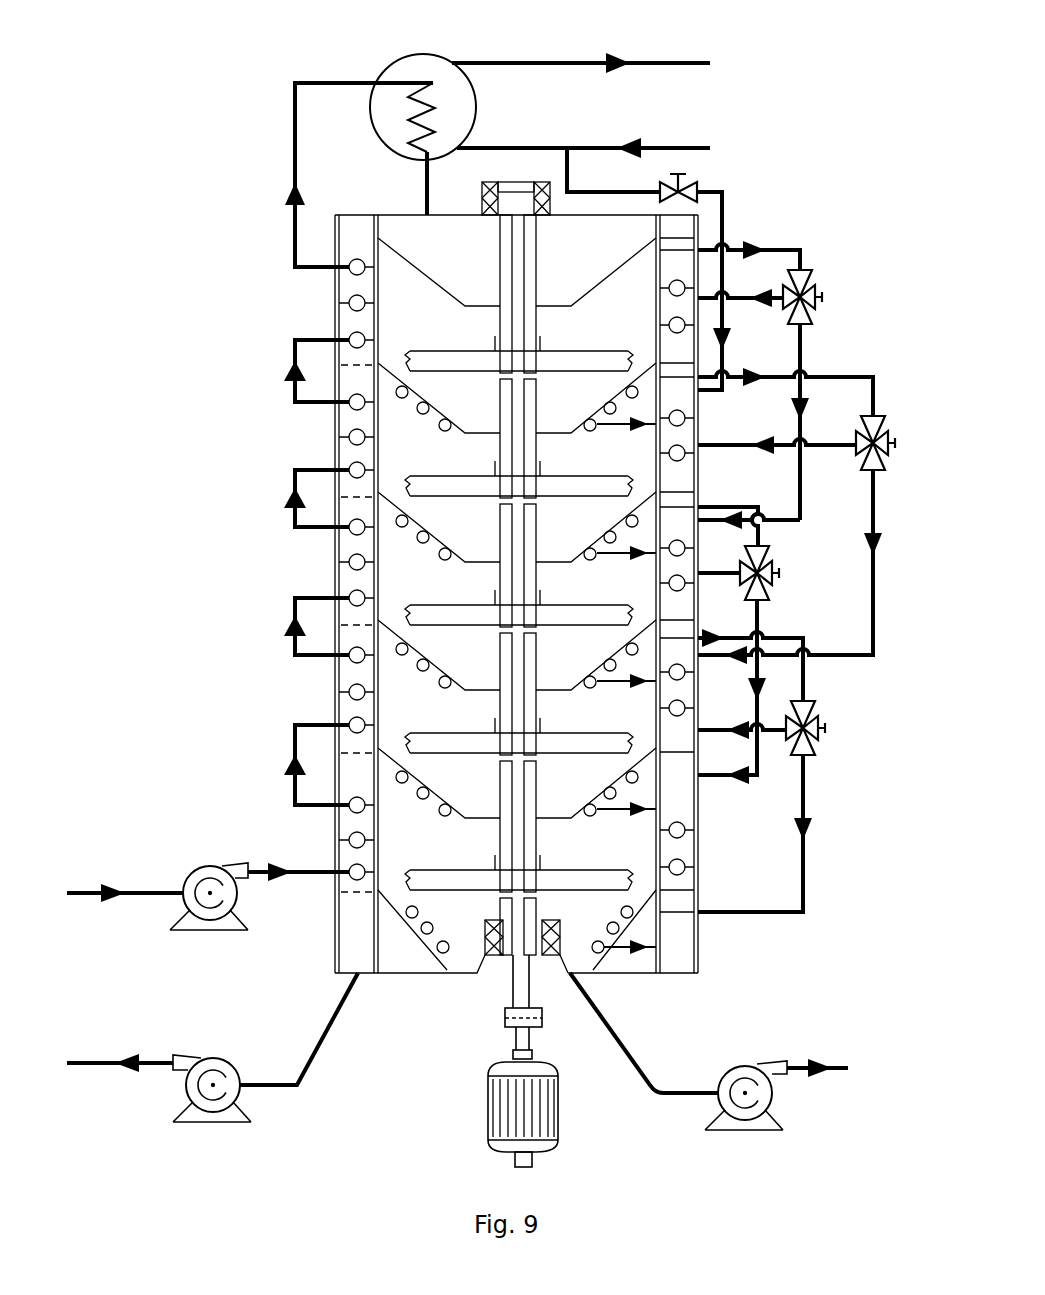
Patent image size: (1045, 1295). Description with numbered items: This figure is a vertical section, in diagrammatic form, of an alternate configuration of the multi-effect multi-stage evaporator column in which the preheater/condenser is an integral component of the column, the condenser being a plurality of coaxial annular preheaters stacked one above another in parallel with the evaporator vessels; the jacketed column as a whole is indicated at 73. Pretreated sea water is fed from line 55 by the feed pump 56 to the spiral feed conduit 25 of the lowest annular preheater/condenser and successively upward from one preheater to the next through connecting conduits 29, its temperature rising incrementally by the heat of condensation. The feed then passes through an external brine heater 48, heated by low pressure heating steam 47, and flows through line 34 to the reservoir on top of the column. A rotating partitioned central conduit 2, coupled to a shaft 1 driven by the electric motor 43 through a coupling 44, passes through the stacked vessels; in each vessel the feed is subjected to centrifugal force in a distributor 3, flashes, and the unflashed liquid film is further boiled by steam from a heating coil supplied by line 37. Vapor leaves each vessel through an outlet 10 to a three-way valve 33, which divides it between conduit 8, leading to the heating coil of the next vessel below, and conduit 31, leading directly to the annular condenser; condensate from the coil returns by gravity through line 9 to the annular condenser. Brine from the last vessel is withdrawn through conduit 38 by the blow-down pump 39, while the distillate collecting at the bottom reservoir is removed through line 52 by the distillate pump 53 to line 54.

The shaft 1 is at (540, 284).
The rotating partitioned central conduit 2 is at (496, 282).
The distributor 3 is at (569, 353).
The conduit 8 is at (806, 458).
The line 9 is at (614, 429).
The outlet 10 is at (807, 248).
The spiral feed conduit 25 is at (348, 703).
The connecting conduit 29 is at (286, 342).
The conduit 31 is at (768, 302).
The three-way valve 33 is at (884, 428).
The line 34 is at (424, 212).
The line 37 is at (733, 238).
The conduit 38 is at (641, 1061).
The blow-down pump 39 is at (720, 1066).
The electric motor 43 is at (484, 1123).
The coupling 44 is at (505, 1033).
The low pressure heating steam 47 is at (655, 146).
The brine heater 48 is at (450, 66).
The line 52 is at (303, 1029).
The distillate pump 53 is at (243, 1059).
The line 54 is at (97, 1059).
The line 55 is at (141, 883).
The feed pump 56 is at (196, 850).
The heating jacket 73 is at (356, 942).